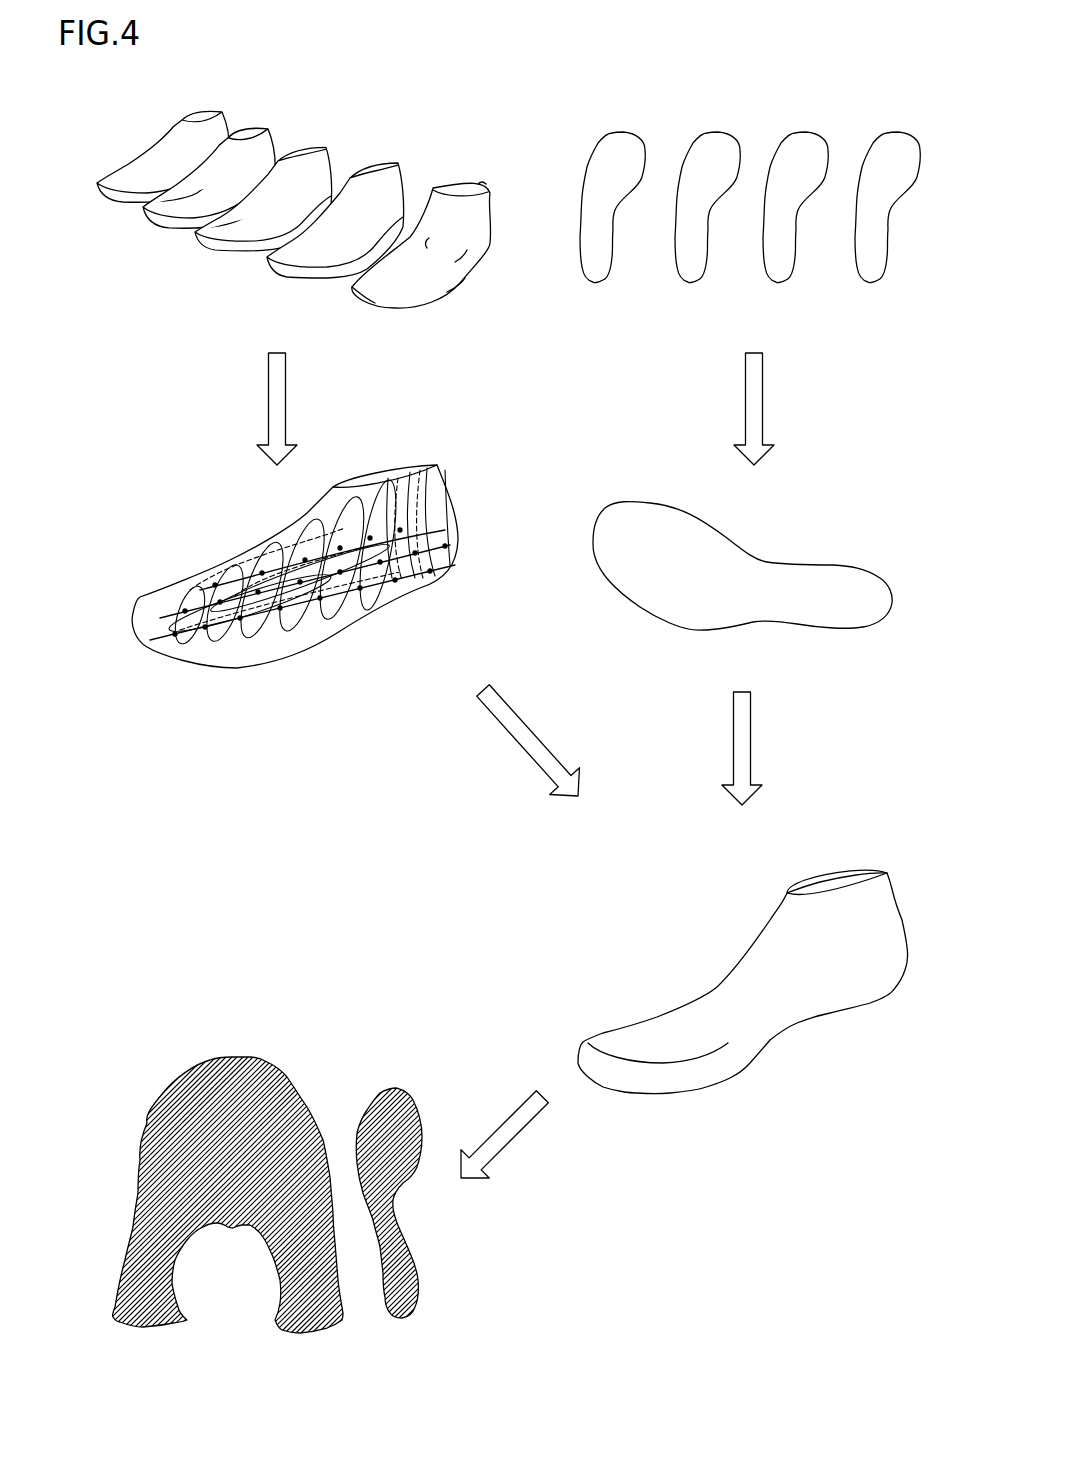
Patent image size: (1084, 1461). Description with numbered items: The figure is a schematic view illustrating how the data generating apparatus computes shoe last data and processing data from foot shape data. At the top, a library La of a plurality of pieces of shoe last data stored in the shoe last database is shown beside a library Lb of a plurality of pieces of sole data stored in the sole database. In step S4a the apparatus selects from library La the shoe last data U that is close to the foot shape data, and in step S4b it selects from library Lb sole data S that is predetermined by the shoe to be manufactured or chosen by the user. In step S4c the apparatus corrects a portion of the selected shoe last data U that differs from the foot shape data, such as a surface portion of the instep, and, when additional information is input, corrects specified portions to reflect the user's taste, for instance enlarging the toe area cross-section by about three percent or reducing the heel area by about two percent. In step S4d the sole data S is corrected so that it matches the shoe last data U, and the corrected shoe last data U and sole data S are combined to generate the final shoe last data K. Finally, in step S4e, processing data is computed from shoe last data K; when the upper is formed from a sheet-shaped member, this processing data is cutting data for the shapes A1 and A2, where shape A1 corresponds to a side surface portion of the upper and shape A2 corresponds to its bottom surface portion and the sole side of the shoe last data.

The library of shoe last data La is at (492, 108).
The library of sole data Lb is at (937, 108).
The step of selecting shoe last data S4a is at (287, 392).
The step of selecting sole data S4b is at (764, 392).
The step of correcting shoe last data S4c is at (513, 700).
The step of correcting sole data S4d is at (755, 738).
The step of computing processing data S4e is at (517, 1134).
The shoe last data U is at (155, 590).
The sole data S is at (780, 560).
The shoe last data K is at (610, 1020).
The shape of the upper A1 is at (207, 1057).
The shape of the upper A2 is at (383, 1087).